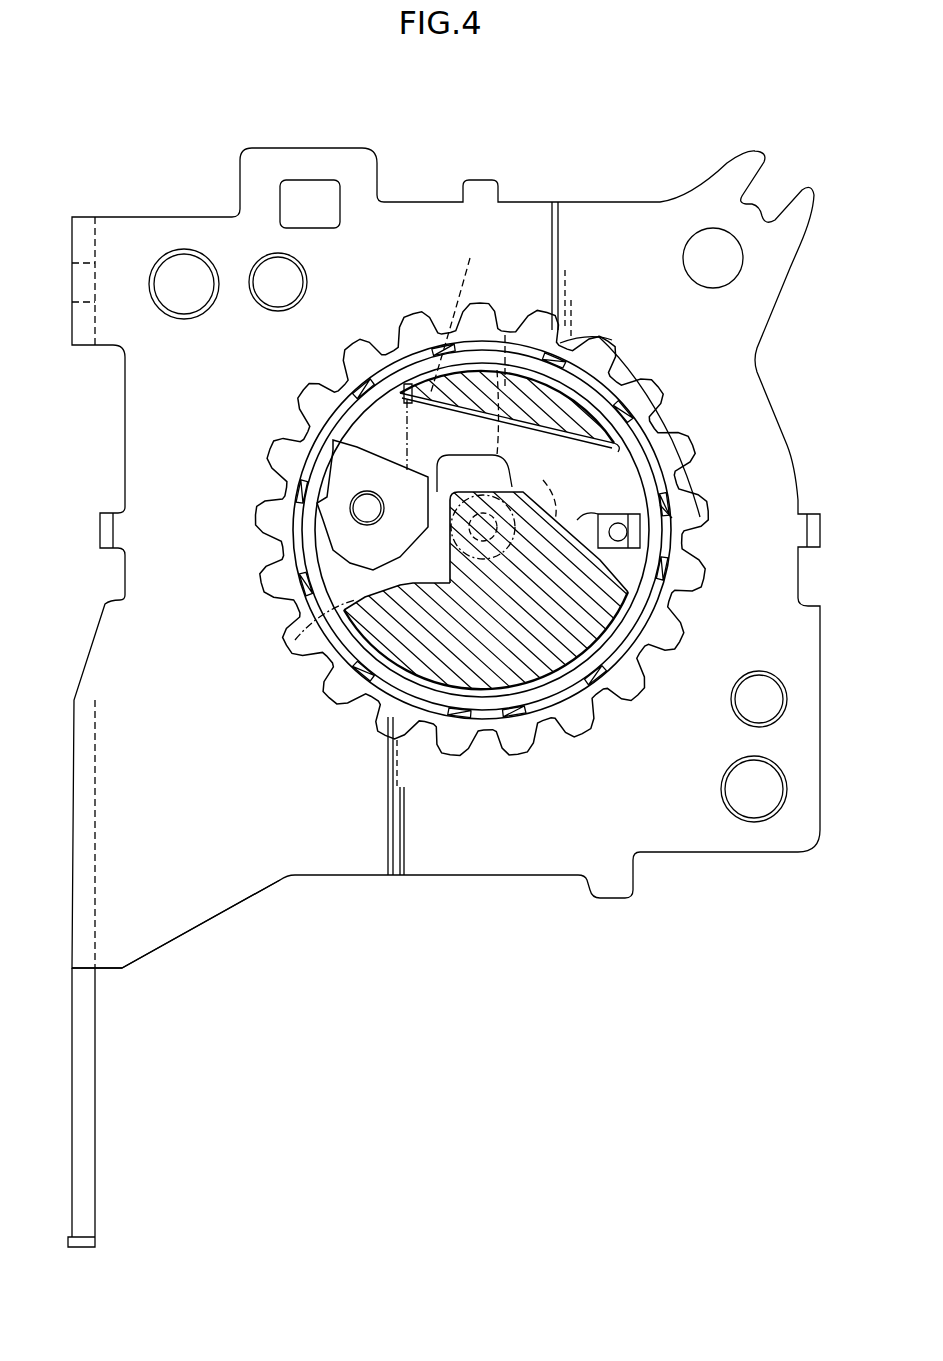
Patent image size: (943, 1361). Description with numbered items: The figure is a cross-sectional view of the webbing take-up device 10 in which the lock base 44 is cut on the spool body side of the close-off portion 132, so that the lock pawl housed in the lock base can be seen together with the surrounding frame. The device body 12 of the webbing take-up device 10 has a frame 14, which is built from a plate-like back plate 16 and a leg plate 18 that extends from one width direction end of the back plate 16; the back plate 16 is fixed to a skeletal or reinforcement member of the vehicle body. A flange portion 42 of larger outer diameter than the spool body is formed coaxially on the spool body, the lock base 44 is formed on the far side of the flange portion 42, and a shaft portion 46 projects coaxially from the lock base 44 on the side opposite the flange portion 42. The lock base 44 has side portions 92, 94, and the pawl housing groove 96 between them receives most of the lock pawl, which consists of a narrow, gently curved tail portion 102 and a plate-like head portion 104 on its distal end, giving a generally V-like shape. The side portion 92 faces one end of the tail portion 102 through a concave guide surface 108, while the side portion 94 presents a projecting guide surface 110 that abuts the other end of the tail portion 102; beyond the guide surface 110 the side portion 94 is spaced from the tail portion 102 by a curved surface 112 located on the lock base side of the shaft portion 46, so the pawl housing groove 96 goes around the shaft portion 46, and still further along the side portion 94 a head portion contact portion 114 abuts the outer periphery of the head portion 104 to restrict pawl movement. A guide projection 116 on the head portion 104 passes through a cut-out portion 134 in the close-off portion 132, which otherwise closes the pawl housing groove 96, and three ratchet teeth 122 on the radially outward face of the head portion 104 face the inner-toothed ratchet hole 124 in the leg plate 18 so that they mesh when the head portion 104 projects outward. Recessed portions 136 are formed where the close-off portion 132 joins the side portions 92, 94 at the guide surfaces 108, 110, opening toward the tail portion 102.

The webbing take-up device 10 is at (172, 160).
The device body 12 is at (604, 190).
The frame 14 is at (208, 943).
The back plate 16 is at (85, 1127).
The leg plate 18 is at (147, 945).
The flange portion 42 is at (665, 512).
The lock base 44 is at (605, 420).
The shaft portion 46 is at (535, 720).
The side portion 92 is at (505, 335).
The side portion 94 is at (380, 705).
The pawl housing groove 96 is at (502, 367).
The tail portion 102 is at (640, 440).
The head portion 104 is at (400, 443).
The guide surface 108 is at (575, 405).
The guide surface 110 is at (652, 528).
The curved surface 112 is at (488, 470).
The head portion contact portion 114 is at (417, 720).
The guide projection 116 is at (360, 513).
The ratchet teeth 122 is at (330, 470).
The ratchet hole 124 is at (618, 678).
The close-off portion 132 is at (388, 385).
The cut-out portion 134 is at (295, 640).
The recessed portions 136 is at (501, 375).